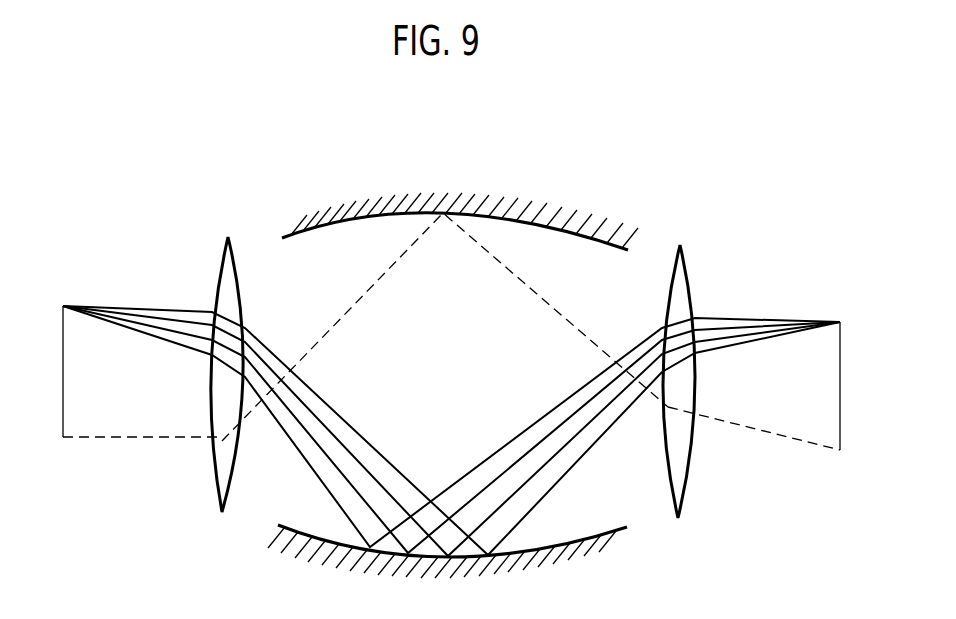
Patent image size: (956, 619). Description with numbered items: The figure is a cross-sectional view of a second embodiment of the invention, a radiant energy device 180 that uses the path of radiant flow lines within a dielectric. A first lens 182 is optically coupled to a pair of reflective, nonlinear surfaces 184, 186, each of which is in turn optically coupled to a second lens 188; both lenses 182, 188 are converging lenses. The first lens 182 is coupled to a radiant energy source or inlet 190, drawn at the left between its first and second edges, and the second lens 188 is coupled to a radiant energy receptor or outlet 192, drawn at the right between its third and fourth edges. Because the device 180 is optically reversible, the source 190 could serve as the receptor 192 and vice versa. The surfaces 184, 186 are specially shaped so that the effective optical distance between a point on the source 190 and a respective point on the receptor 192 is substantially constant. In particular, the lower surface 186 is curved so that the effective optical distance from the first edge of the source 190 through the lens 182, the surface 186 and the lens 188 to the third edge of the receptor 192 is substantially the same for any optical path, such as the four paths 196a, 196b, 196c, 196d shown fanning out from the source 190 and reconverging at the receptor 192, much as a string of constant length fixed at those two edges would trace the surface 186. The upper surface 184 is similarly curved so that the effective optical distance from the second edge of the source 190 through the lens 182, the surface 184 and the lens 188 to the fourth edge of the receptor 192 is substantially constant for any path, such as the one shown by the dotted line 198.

The radiant energy device 180 is at (195, 207).
The first lens 182 is at (217, 282).
The reflective nonlinear surface 184 is at (596, 240).
The reflective nonlinear surface 186 is at (604, 532).
The second lens 188 is at (688, 480).
The radiant energy source 190 is at (62, 371).
The radiant energy receptor 192 is at (840, 388).
The optical path 196a is at (448, 487).
The optical path 196b is at (480, 487).
The optical path 196c is at (555, 457).
The optical path 196d is at (530, 512).
The optical path (dotted line) 198 is at (404, 258).